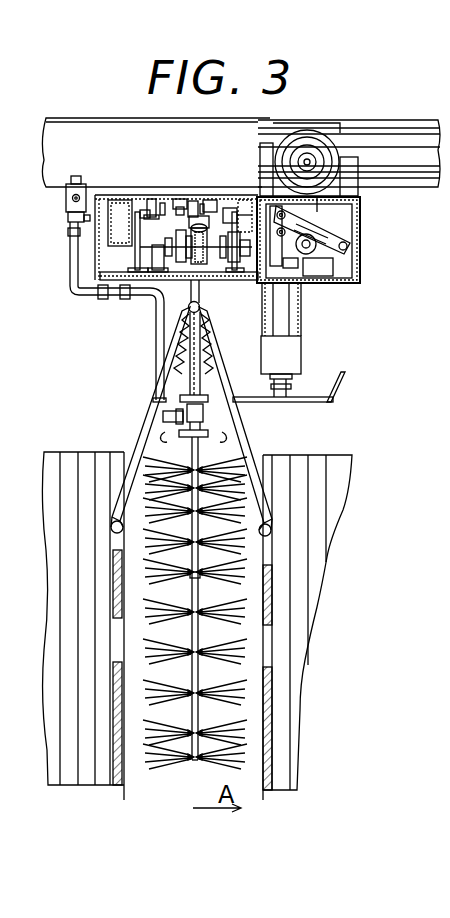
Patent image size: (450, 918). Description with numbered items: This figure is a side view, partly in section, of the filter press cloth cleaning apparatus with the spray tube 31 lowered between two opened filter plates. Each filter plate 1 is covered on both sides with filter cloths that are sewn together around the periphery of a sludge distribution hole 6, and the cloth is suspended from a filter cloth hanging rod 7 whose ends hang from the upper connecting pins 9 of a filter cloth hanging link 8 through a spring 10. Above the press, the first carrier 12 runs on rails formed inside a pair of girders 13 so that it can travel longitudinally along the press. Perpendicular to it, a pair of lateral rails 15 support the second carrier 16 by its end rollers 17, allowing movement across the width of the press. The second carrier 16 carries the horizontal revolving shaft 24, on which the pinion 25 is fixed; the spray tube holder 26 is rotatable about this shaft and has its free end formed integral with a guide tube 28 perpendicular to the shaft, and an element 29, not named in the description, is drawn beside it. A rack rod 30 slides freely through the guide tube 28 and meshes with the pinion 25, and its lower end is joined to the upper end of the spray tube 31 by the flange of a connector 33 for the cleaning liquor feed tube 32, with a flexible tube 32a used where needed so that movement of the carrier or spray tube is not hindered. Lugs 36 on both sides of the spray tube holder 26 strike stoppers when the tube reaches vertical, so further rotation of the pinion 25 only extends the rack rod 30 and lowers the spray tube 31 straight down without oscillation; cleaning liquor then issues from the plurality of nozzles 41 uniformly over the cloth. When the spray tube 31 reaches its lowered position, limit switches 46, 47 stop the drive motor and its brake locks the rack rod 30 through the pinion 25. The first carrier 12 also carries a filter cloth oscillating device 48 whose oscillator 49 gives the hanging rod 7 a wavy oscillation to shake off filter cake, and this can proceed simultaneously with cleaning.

The filter plate 1 is at (100, 455).
The sludge distribution hole 6 is at (112, 649).
The filter cloth hanging rod 7 is at (158, 440).
The filter cloth hanging link 8 is at (138, 440).
The upper connecting pins 9 is at (189, 304).
The spring 10 is at (180, 362).
The first carrier 12 is at (406, 158).
The girders 13 is at (332, 121).
The rails 15 is at (98, 238).
The second carrier 16 is at (117, 297).
The end rollers 17 is at (112, 202).
The horizontal revolving shaft 24 is at (162, 246).
The pinion 25 is at (198, 232).
The spray tube holder 26 is at (197, 280).
The guide tube 28 is at (211, 204).
The bearing stand 29 is at (176, 208).
The rack rod 30 is at (192, 198).
The spray tube 31 is at (200, 558).
The cleaning liquor feed tube 32 is at (72, 292).
The flexible tube 32a is at (153, 365).
The connector 33 is at (205, 414).
The lugs 36 is at (208, 228).
The nozzles 41 is at (205, 628).
The limit switch 46 is at (127, 318).
The limit switch 47 is at (122, 299).
The filter cloth oscillating device 48 is at (361, 250).
The oscillator 49 is at (328, 402).